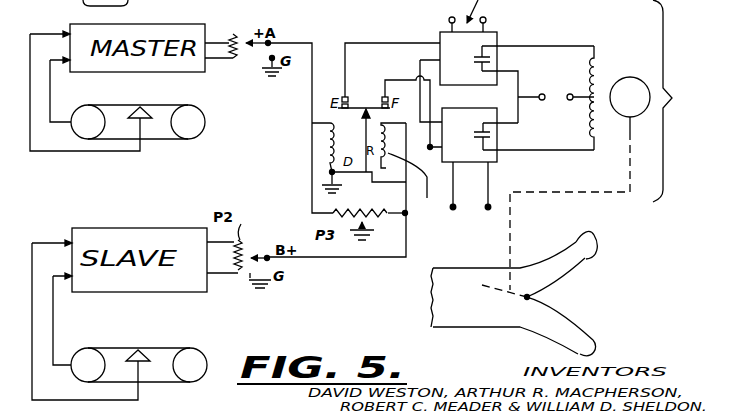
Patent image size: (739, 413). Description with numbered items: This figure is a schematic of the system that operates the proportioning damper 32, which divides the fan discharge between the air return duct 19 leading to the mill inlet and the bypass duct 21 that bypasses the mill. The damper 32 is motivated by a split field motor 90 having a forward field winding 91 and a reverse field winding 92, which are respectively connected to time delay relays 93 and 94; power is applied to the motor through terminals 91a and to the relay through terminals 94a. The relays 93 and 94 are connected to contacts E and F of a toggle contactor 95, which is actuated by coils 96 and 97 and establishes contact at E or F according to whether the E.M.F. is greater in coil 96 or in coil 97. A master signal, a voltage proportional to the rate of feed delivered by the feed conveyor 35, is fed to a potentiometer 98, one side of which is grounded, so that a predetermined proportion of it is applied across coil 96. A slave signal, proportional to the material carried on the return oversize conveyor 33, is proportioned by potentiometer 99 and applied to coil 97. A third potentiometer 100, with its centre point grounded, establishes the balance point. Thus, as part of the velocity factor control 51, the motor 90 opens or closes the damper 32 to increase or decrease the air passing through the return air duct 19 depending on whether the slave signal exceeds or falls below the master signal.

The feed conveyor 35 is at (168, 140).
The return oversize conveyor 33 is at (157, 385).
The potentiometer 98 is at (237, 33).
The potentiometer 99 is at (246, 251).
The coil 96 is at (327, 137).
The toggle contactor 95 is at (364, 95).
The third potentiometer 100 is at (383, 198).
The coil 97 is at (410, 188).
The time delay relay 93 is at (498, 38).
The time delay relay 94 is at (497, 162).
The terminals 94a is at (467, 205).
The terminals 91a is at (557, 92).
The reverse field winding 92 is at (588, 120).
The forward field winding 91 is at (598, 66).
The motor 90 is at (630, 77).
The velocity factor control 51 is at (676, 101).
The air return duct 19 is at (558, 255).
The bypass duct 21 is at (557, 313).
The proportioning damper 32 is at (527, 297).